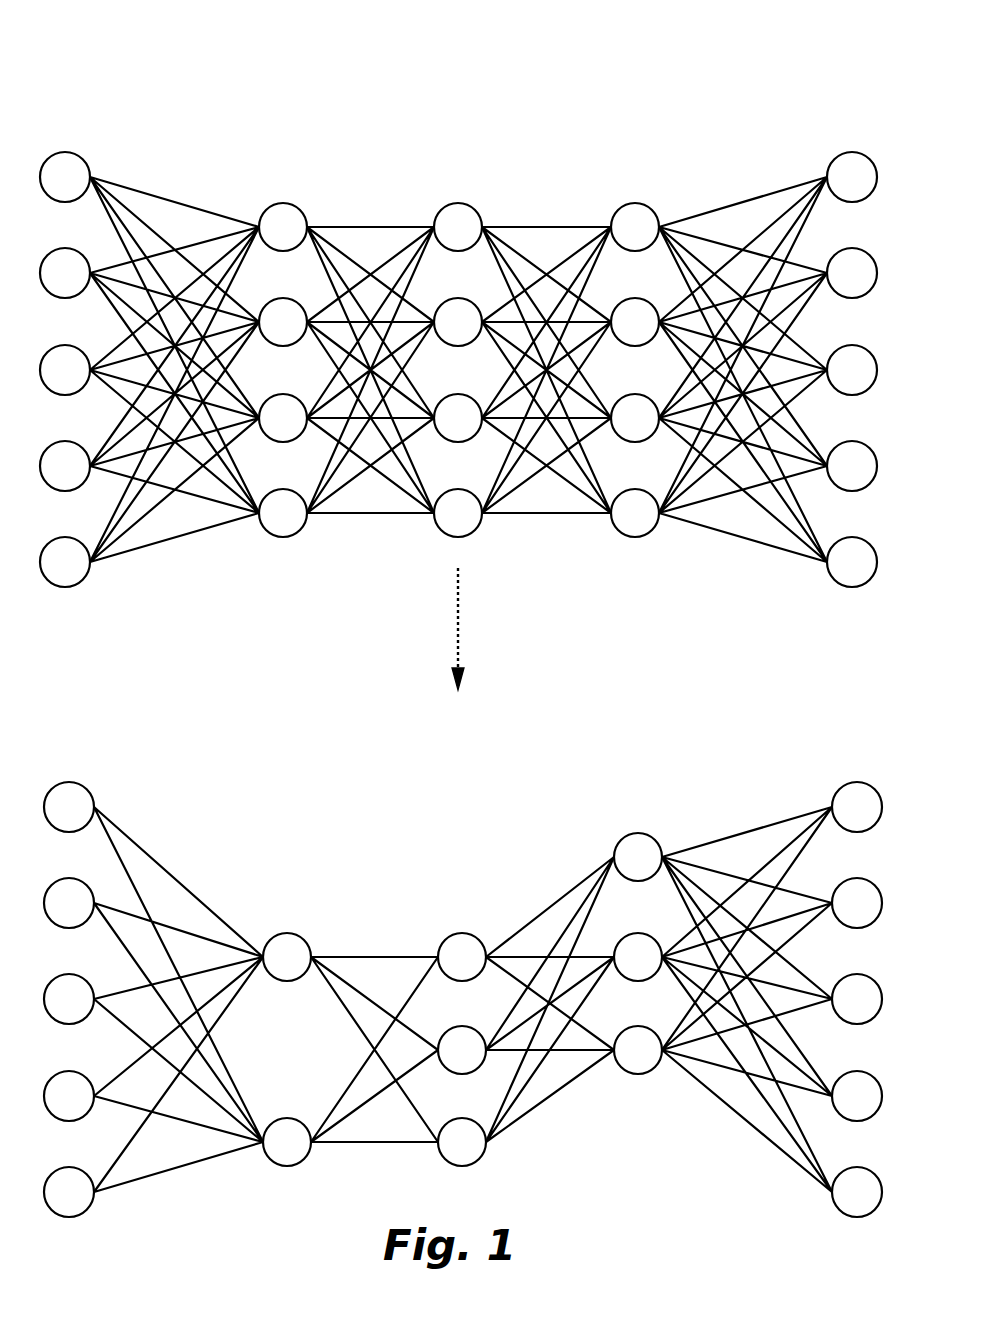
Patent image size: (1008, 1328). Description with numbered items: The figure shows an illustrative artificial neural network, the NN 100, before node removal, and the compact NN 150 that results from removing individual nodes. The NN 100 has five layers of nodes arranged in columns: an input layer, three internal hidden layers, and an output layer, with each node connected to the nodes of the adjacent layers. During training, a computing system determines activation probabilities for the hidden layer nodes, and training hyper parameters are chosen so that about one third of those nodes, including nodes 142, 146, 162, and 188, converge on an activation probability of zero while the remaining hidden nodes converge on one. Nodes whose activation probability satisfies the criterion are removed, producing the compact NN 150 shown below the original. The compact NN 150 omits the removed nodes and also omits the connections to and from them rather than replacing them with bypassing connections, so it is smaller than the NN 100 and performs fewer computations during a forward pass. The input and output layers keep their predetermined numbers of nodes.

The neural network 100 is at (738, 84).
The compact neural network 150 is at (738, 722).
The node 142 is at (283, 227).
The node 146 is at (283, 418).
The node 162 is at (458, 227).
The node 188 is at (635, 513).